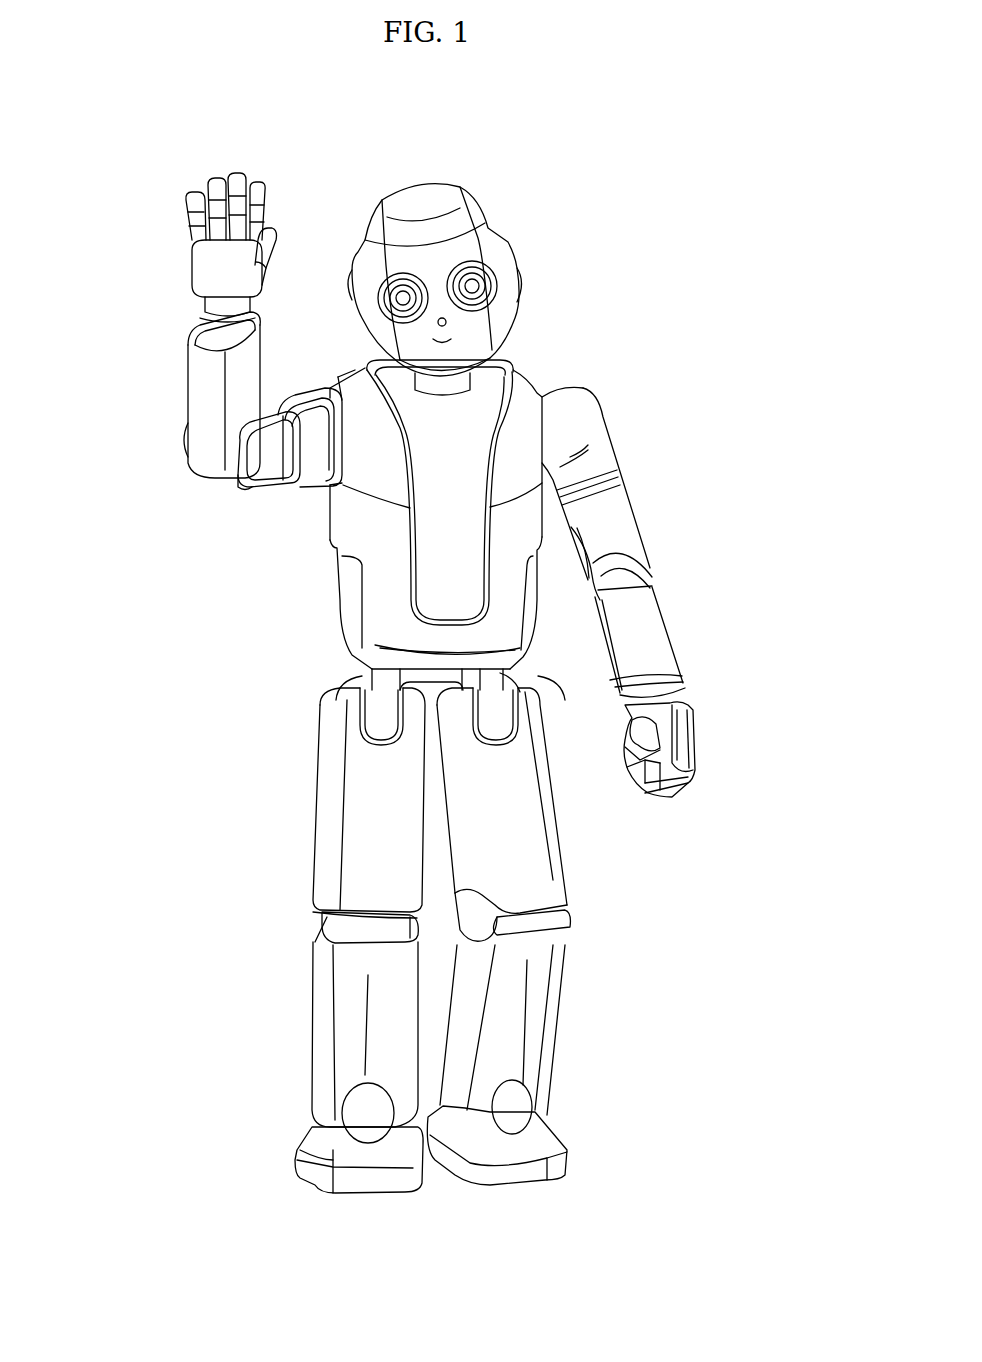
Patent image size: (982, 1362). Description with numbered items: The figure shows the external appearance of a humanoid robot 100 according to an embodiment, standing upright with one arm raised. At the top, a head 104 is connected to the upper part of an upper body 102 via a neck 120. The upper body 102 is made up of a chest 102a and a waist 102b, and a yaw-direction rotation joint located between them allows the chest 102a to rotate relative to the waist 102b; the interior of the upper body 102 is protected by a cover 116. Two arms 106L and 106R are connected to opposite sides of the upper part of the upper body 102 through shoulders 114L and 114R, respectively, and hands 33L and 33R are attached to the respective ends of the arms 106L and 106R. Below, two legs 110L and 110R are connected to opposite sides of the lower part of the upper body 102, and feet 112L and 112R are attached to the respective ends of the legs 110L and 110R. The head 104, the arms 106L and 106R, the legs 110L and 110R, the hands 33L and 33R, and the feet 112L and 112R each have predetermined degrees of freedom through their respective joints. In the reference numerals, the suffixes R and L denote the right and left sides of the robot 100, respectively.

The humanoid robot 100 is at (608, 165).
The head 104 is at (482, 195).
The neck 120 is at (512, 343).
The upper body 102 is at (218, 543).
The chest 102a is at (330, 537).
The waist 102b is at (330, 615).
The cover 116 is at (330, 503).
The right shoulder 114R is at (317, 380).
The left shoulder 114L is at (592, 390).
The right arm 106R is at (186, 470).
The left arm 106L is at (668, 577).
The right hand 33R is at (184, 270).
The left hand 33L is at (710, 743).
The right leg 110R is at (303, 917).
The left leg 110L is at (582, 914).
The right foot 112R is at (300, 1150).
The left foot 112L is at (572, 1128).